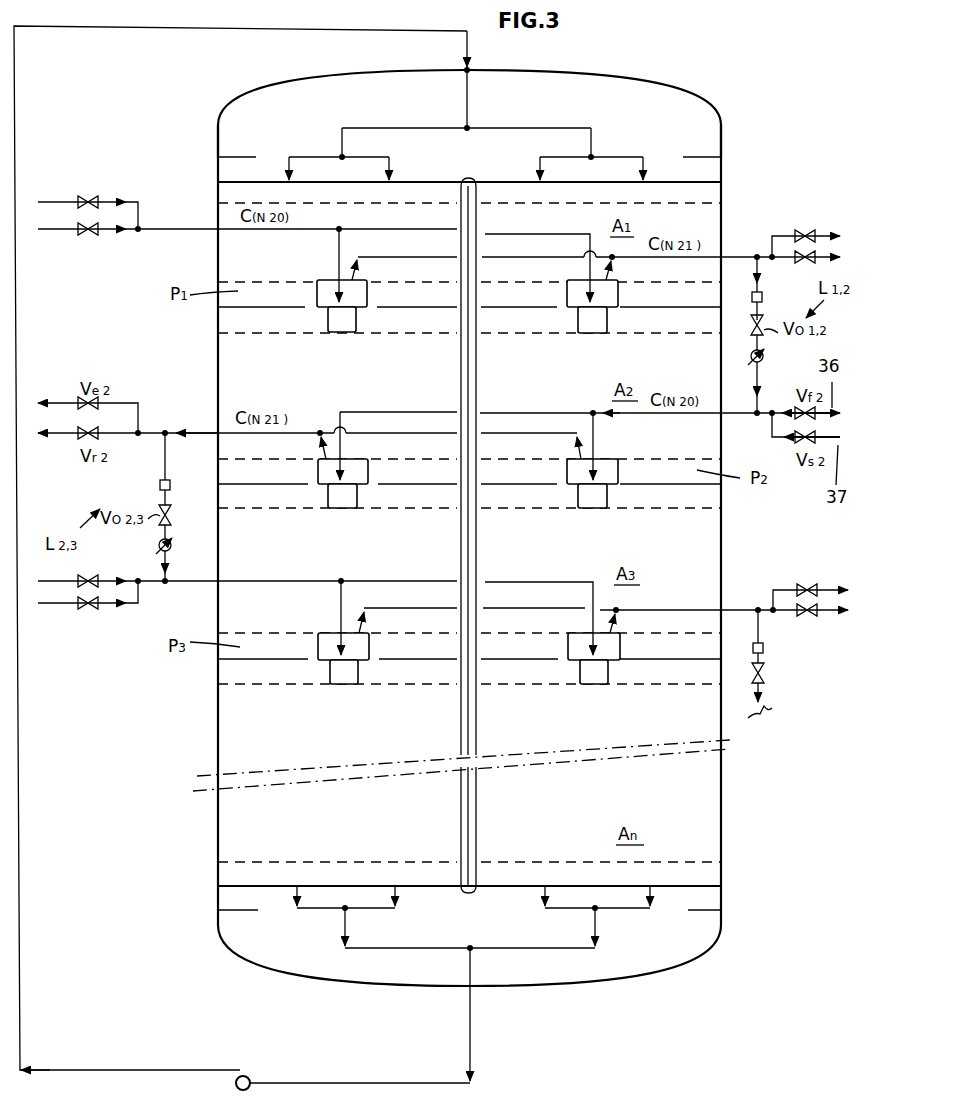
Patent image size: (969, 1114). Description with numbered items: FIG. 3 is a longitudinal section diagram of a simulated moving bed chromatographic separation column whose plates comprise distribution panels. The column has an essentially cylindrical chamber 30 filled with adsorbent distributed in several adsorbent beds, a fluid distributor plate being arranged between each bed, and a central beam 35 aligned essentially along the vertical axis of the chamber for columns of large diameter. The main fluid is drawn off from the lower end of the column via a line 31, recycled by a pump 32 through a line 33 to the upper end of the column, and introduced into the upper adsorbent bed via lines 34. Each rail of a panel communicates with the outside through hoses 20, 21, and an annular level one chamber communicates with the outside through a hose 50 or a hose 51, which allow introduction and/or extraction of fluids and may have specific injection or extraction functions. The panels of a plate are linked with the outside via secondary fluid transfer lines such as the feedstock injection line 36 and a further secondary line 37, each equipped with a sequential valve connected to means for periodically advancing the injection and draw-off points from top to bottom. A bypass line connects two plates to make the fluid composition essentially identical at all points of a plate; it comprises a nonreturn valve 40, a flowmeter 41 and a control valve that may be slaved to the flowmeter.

The hose 20 is at (366, 258).
The hose 21 is at (338, 258).
The chamber 30 is at (741, 178).
The line 31 is at (470, 1045).
The pump 32 is at (250, 1077).
The line 33 is at (80, 28).
The lines 34 is at (540, 168).
The central beam 35 is at (460, 810).
The feedstock injection line 36 is at (832, 408).
The solvent feed line 37 is at (838, 445).
The nonreturn valve 40 is at (764, 357).
The flowmeter 41 is at (764, 298).
The hose 50 is at (172, 226).
The hose 51 is at (743, 258).